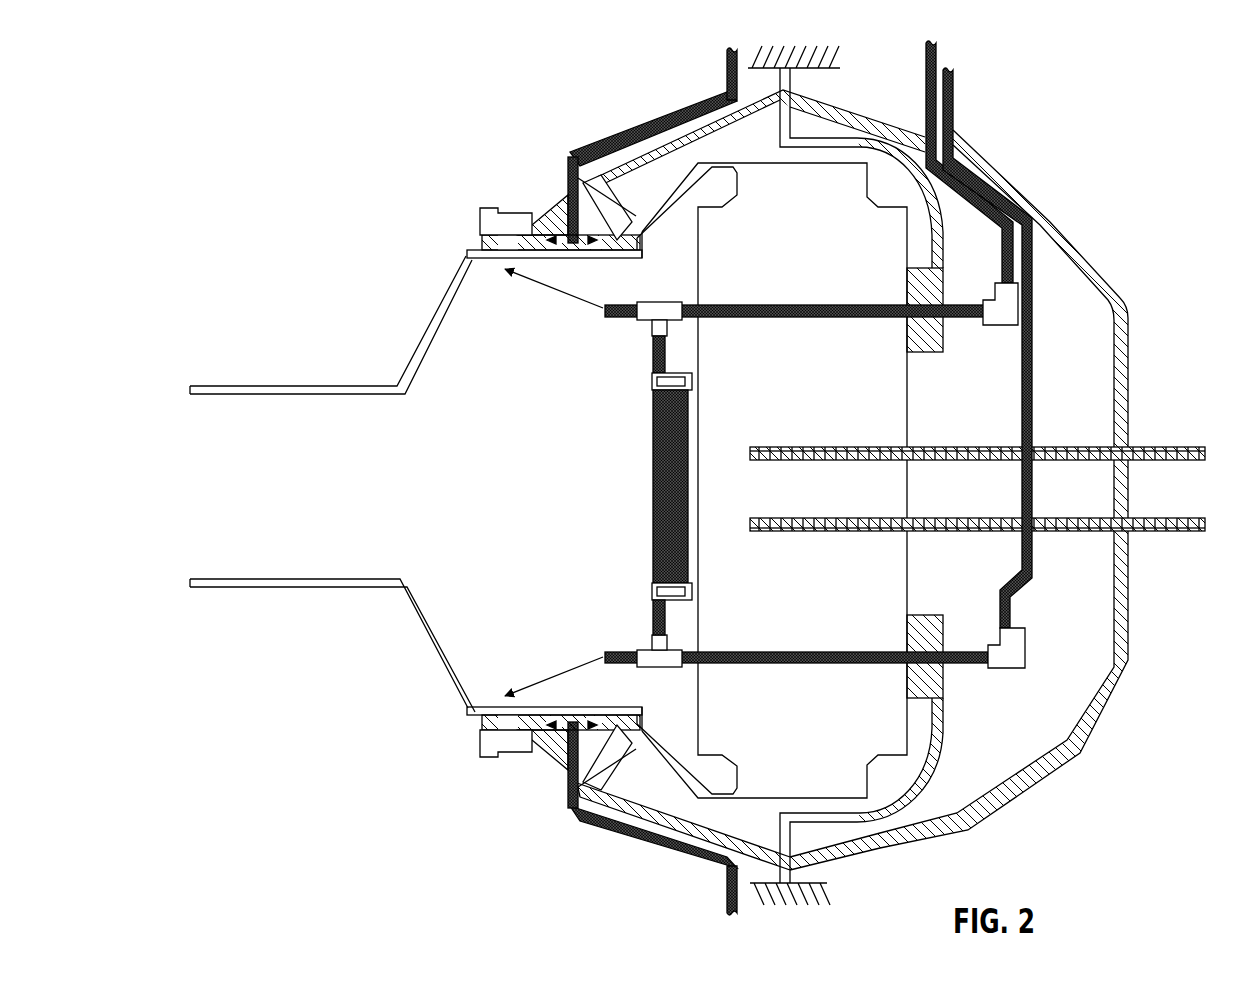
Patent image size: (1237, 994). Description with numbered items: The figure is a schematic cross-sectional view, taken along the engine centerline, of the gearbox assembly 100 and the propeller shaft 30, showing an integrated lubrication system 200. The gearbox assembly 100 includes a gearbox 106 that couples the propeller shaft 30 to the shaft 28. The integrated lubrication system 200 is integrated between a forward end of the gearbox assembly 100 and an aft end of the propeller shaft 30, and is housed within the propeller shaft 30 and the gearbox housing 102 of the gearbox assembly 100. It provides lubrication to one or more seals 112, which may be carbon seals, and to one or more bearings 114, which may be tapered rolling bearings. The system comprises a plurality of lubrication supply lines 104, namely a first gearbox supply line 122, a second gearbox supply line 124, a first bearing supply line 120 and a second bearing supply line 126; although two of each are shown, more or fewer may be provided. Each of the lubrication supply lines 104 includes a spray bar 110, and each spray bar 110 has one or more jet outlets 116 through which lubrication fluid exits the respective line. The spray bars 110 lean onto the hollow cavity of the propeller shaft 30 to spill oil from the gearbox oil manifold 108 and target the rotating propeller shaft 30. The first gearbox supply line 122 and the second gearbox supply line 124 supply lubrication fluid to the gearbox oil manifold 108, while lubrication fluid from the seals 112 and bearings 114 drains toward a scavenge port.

The shaft 28 is at (1165, 534).
The propeller shaft 30 is at (293, 589).
The gearbox assembly 100 is at (1037, 208).
The gearbox housing 102 is at (1130, 380).
The lubrication supply lines 104 is at (817, 474).
The gearbox 106 is at (848, 762).
The gearbox oil manifold 108 is at (662, 533).
The spray bar 110 is at (470, 262).
The seals 112 is at (479, 237).
The bearings 114 is at (530, 222).
The jet outlets 116 is at (527, 277).
The first bearing supply line 120 is at (641, 132).
The first gearbox supply line 122 is at (925, 112).
The second gearbox supply line 124 is at (953, 130).
The second bearing supply line 126 is at (686, 843).
The integrated lubrication system 200 is at (703, 474).